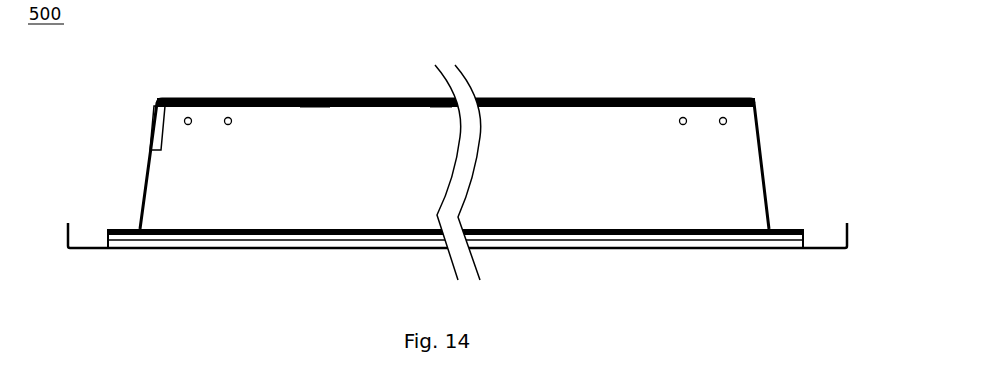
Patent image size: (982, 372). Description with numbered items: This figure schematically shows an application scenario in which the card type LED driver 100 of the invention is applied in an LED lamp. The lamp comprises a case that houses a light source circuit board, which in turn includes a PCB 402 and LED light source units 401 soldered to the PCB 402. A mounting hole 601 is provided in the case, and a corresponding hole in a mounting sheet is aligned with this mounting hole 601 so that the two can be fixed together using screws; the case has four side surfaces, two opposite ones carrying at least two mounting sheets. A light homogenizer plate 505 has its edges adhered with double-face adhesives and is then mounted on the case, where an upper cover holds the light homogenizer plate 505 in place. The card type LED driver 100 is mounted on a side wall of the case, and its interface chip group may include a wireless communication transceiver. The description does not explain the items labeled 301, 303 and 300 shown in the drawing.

The card type LED driver 100 is at (157, 104).
The positioning block 301 is at (162, 118).
The PCB 402 is at (270, 98).
The top surface 303 is at (314, 98).
The LED light source unit 401 is at (442, 107).
The mounting hole 601 is at (719, 119).
The light homogenizer plate 505 is at (184, 241).
The back plate tray 300 is at (290, 250).